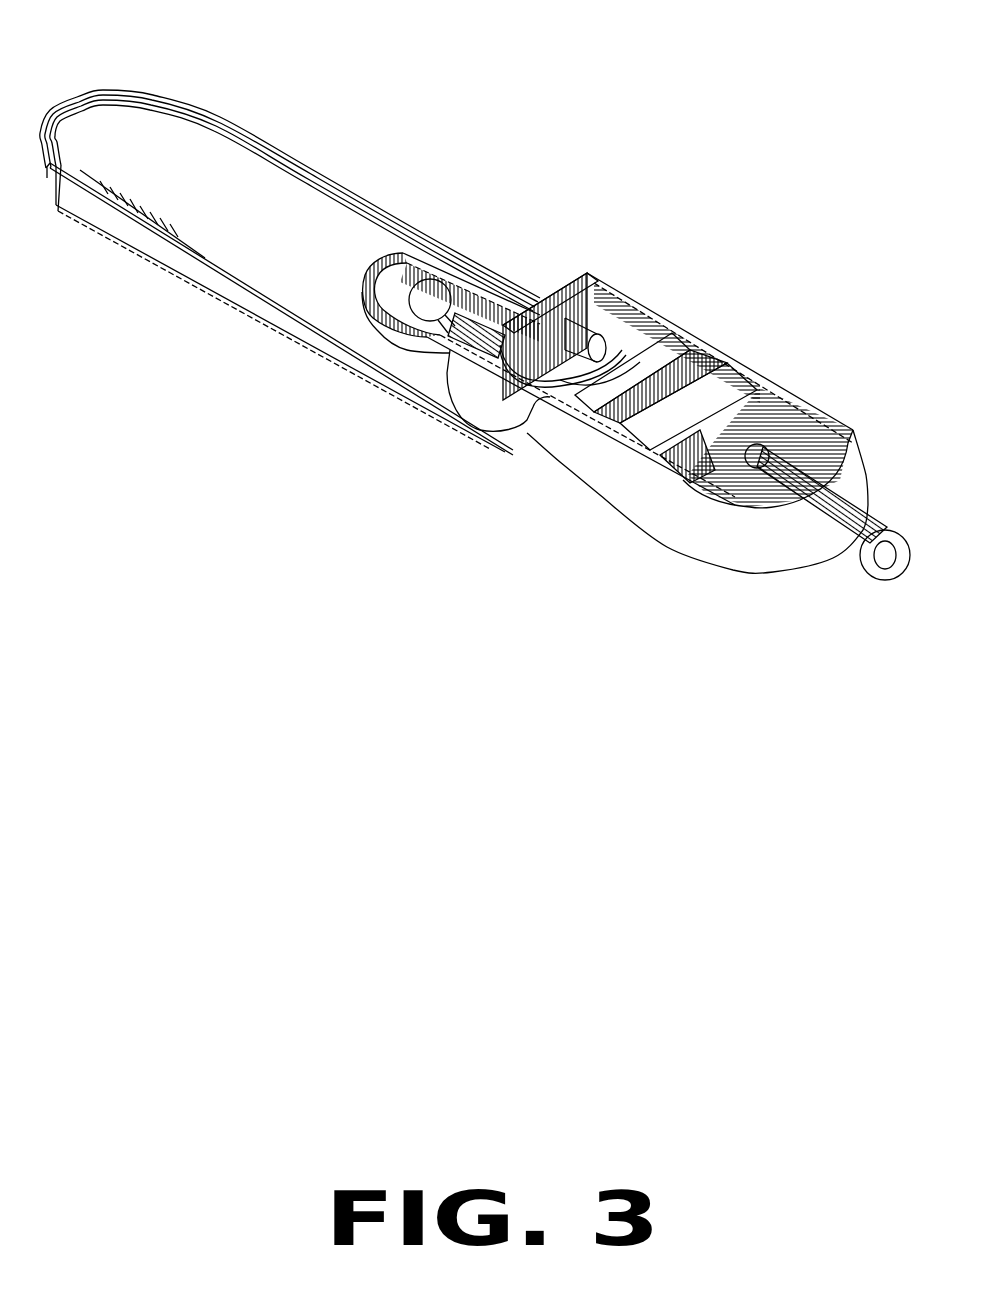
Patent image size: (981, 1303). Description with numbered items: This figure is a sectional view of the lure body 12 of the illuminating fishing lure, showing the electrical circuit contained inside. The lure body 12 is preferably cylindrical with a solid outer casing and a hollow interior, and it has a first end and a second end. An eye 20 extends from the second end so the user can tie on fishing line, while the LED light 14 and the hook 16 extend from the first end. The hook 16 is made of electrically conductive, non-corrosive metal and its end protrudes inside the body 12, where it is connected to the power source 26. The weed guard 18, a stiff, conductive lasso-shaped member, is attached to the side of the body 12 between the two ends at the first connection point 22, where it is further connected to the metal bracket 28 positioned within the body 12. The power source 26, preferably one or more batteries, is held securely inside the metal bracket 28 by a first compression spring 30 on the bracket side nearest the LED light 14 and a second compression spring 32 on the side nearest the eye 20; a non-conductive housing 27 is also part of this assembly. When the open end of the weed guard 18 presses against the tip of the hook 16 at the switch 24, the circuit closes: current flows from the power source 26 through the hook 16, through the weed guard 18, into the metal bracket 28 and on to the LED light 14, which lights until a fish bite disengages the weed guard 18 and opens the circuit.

The lure body 12 is at (703, 550).
The LED light 14 is at (440, 287).
The hook 16 is at (150, 97).
The weed guard 18 is at (197, 287).
The eye 20 is at (873, 583).
The first connection point 22 is at (457, 390).
The switch 24 is at (47, 175).
The power source 26 is at (660, 438).
The non-conductive housing 27 is at (660, 317).
The metal bracket 28 is at (650, 448).
The first compression spring 30 is at (622, 290).
The second compression spring 32 is at (780, 397).